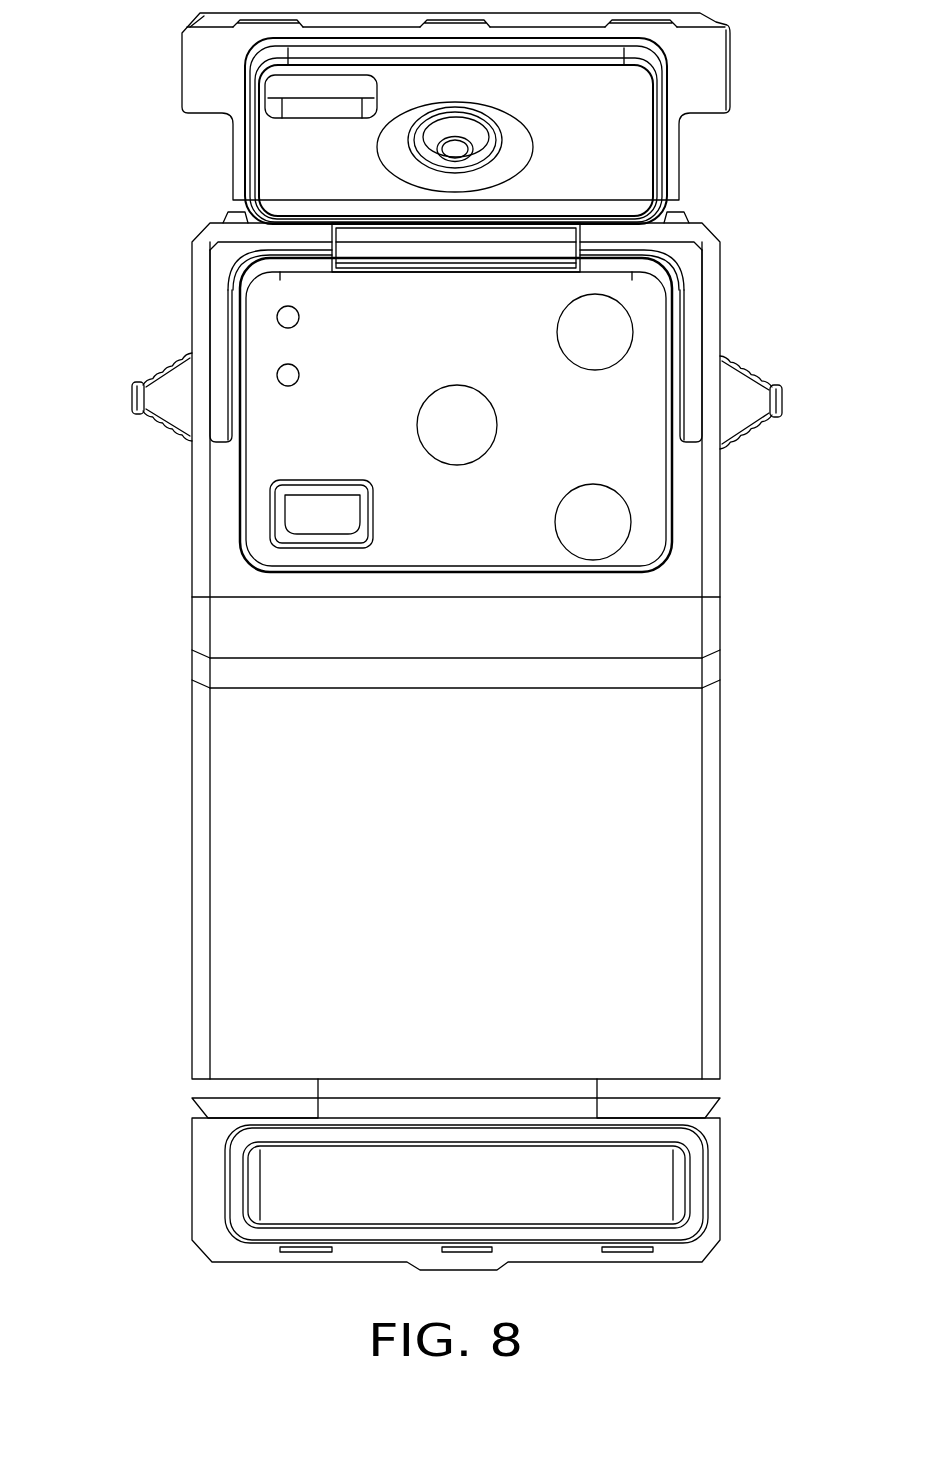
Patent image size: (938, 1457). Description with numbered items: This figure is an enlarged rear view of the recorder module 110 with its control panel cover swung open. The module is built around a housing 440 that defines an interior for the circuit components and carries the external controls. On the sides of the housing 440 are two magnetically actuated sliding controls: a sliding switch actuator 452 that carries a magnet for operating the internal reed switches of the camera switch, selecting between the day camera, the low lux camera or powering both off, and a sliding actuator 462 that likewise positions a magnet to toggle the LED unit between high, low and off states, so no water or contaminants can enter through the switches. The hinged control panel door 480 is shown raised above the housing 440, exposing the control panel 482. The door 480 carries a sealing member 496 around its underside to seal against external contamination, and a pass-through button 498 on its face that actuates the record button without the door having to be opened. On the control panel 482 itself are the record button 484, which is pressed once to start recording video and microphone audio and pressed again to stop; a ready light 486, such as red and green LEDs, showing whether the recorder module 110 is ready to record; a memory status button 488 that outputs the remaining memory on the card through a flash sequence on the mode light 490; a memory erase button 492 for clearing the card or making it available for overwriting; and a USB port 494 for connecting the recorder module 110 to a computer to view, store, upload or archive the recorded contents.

The recorder module 110 is at (438, 641).
The housing 440 is at (262, 808).
The sliding switch actuator 452 is at (757, 393).
The sliding actuator 462 is at (162, 397).
The control panel door 480 is at (708, 78).
The control panel 482 is at (438, 448).
The record button 484 is at (473, 412).
The ready light 486 is at (283, 310).
The memory status button 488 is at (610, 313).
The mode light 490 is at (289, 381).
The memory erase button 492 is at (612, 542).
The USB port 494 is at (308, 490).
The sealing member 496 is at (366, 131).
The pass-through button 498 is at (482, 146).